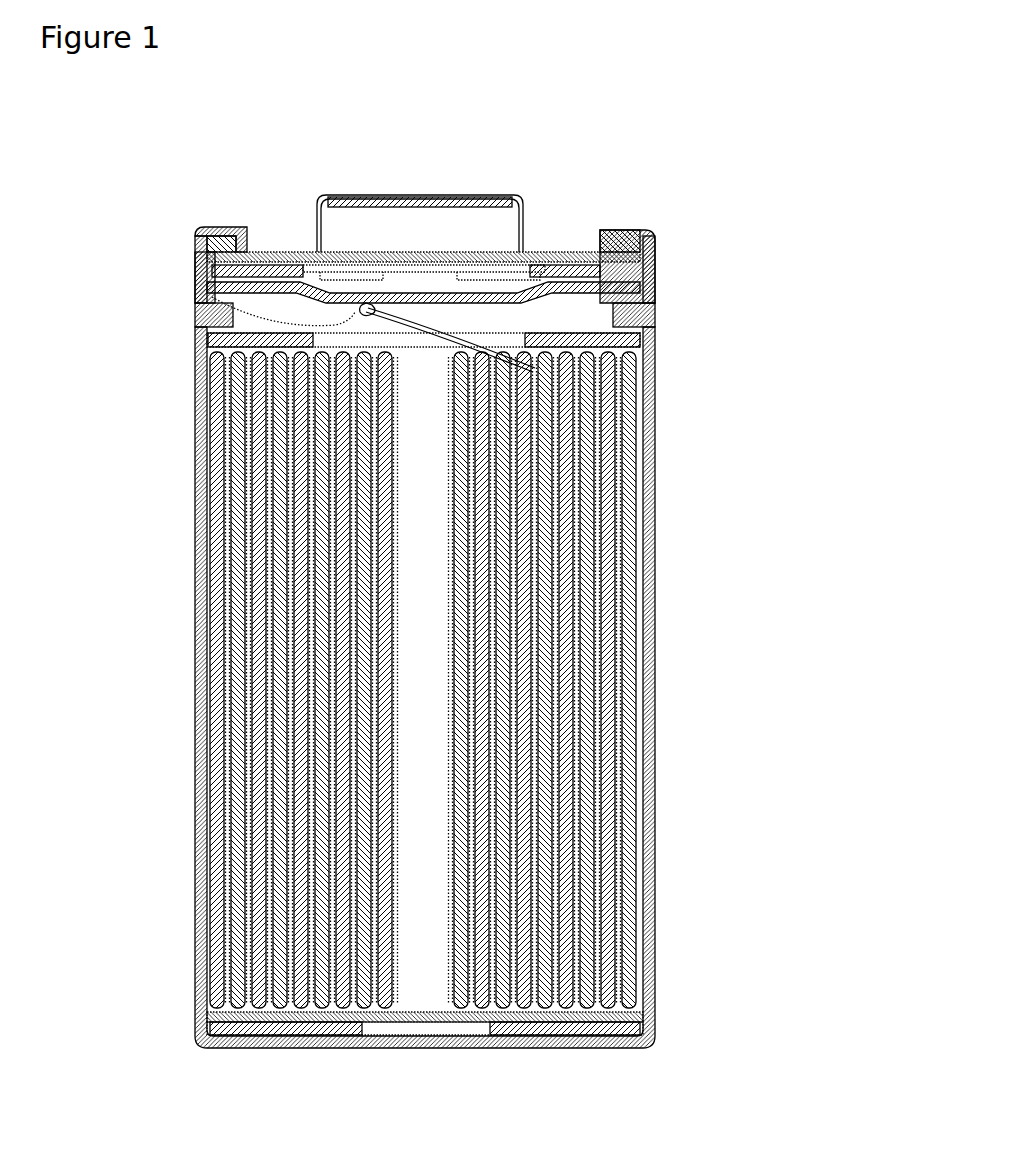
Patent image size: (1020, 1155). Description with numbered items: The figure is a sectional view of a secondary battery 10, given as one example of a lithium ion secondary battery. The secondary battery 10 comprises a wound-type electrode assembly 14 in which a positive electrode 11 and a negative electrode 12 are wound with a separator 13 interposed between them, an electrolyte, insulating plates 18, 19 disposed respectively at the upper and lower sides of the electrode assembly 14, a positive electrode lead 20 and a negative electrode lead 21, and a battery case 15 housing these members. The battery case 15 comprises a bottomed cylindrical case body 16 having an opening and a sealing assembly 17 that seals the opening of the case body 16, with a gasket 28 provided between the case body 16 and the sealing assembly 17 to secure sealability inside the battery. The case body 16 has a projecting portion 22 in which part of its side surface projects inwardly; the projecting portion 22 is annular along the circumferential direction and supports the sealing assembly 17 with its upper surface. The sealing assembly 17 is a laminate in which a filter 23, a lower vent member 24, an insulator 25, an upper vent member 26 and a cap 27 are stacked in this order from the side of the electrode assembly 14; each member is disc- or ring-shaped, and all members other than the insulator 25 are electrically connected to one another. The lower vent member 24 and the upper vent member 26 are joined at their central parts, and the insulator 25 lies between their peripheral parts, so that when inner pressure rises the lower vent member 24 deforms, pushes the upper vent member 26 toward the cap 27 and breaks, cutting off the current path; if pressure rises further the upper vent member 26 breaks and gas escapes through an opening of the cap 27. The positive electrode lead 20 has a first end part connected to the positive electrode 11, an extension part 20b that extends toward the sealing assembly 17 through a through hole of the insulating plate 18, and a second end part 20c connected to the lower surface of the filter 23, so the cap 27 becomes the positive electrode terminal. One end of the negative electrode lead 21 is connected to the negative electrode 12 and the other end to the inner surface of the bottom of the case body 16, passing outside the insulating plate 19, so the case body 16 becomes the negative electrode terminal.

The secondary battery 10 is at (668, 72).
The positive electrode 11 is at (655, 742).
The negative electrode 12 is at (655, 772).
The separator 13 is at (655, 802).
The electrode assembly 14 is at (740, 735).
The battery case 15 is at (632, 140).
The case body 16 is at (622, 230).
The sealing assembly 17 is at (555, 266).
The insulating plate 18 is at (655, 345).
The insulating plate 19 is at (655, 1033).
The positive electrode lead 20 is at (207, 293).
The extension part 20b is at (423, 334).
The second end part 20c is at (370, 309).
The negative electrode lead 21 is at (207, 1026).
The projecting portion 22 is at (197, 313).
The filter 23 is at (420, 290).
The lower vent member 24 is at (327, 205).
The insulator 25 is at (272, 253).
The upper vent member 26 is at (353, 265).
The cap 27 is at (492, 196).
The gasket 28 is at (655, 258).